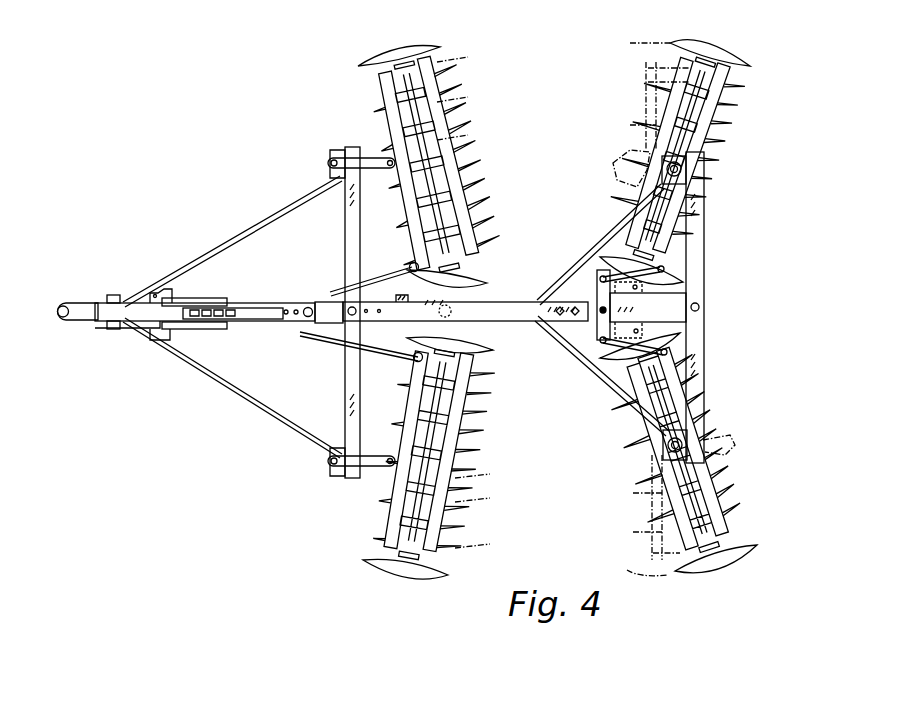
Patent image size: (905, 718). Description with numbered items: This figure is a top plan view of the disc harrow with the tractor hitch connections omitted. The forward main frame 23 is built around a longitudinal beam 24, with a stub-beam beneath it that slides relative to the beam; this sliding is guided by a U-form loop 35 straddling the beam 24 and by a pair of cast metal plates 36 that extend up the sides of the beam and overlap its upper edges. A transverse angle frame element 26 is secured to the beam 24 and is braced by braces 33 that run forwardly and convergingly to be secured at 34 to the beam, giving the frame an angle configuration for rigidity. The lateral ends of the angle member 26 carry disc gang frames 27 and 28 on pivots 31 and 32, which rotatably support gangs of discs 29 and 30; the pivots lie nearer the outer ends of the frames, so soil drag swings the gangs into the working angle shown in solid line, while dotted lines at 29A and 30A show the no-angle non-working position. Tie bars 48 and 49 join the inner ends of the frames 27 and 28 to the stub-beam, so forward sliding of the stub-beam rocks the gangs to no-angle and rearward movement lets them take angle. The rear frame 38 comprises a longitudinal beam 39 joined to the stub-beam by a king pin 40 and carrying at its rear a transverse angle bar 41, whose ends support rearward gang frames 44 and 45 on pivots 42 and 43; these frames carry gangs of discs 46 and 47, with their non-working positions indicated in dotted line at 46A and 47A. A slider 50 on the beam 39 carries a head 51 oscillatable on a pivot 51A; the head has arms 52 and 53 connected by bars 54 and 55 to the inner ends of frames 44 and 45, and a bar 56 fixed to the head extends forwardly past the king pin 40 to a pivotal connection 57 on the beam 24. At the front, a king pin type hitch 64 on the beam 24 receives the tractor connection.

The forward main frame 23 is at (296, 467).
The longitudinal beam 24 is at (268, 322).
The transverse angle frame element 26 is at (345, 406).
The disc gang frame 27 is at (465, 222).
The disc gang frame 28 is at (460, 410).
The gang of discs 29 is at (470, 186).
The gang of discs in non-working position 29A is at (470, 97).
The gang of discs 30 is at (470, 462).
The gang of discs in non-working position 30A is at (484, 502).
The pivot 31 is at (380, 169).
The pivot 32 is at (383, 468).
The brace 33 is at (166, 274).
The brace securing point 34 is at (112, 295).
The U-form loop 35 is at (402, 293).
The cast metal plate 36 is at (222, 298).
The rear frame 38 is at (587, 469).
The longitudinal beam 39 is at (512, 322).
The king pin 40 is at (460, 295).
The transverse angle bar 41 is at (706, 284).
The pivot 42 is at (681, 168).
The pivot 43 is at (687, 441).
The rearward gang frame 44 is at (722, 121).
The rearward gang frame 45 is at (727, 501).
The gang of discs 46 is at (613, 163).
The gang of discs in non-working position 46A is at (640, 90).
The gang of discs 47 is at (736, 445).
The gang of discs in non-working position 47A is at (627, 570).
The tie bar 48 is at (380, 282).
The tie bar 49 is at (386, 343).
The slider 50 is at (597, 316).
The head 51 is at (624, 322).
The pivot 51A is at (597, 300).
The arm 52 is at (596, 282).
The arm 53 is at (603, 340).
The bar 54 is at (610, 268).
The bar 55 is at (616, 348).
The bar 56 is at (500, 300).
The pivotal connection 57 is at (326, 325).
The king pin hitch 64 is at (64, 321).